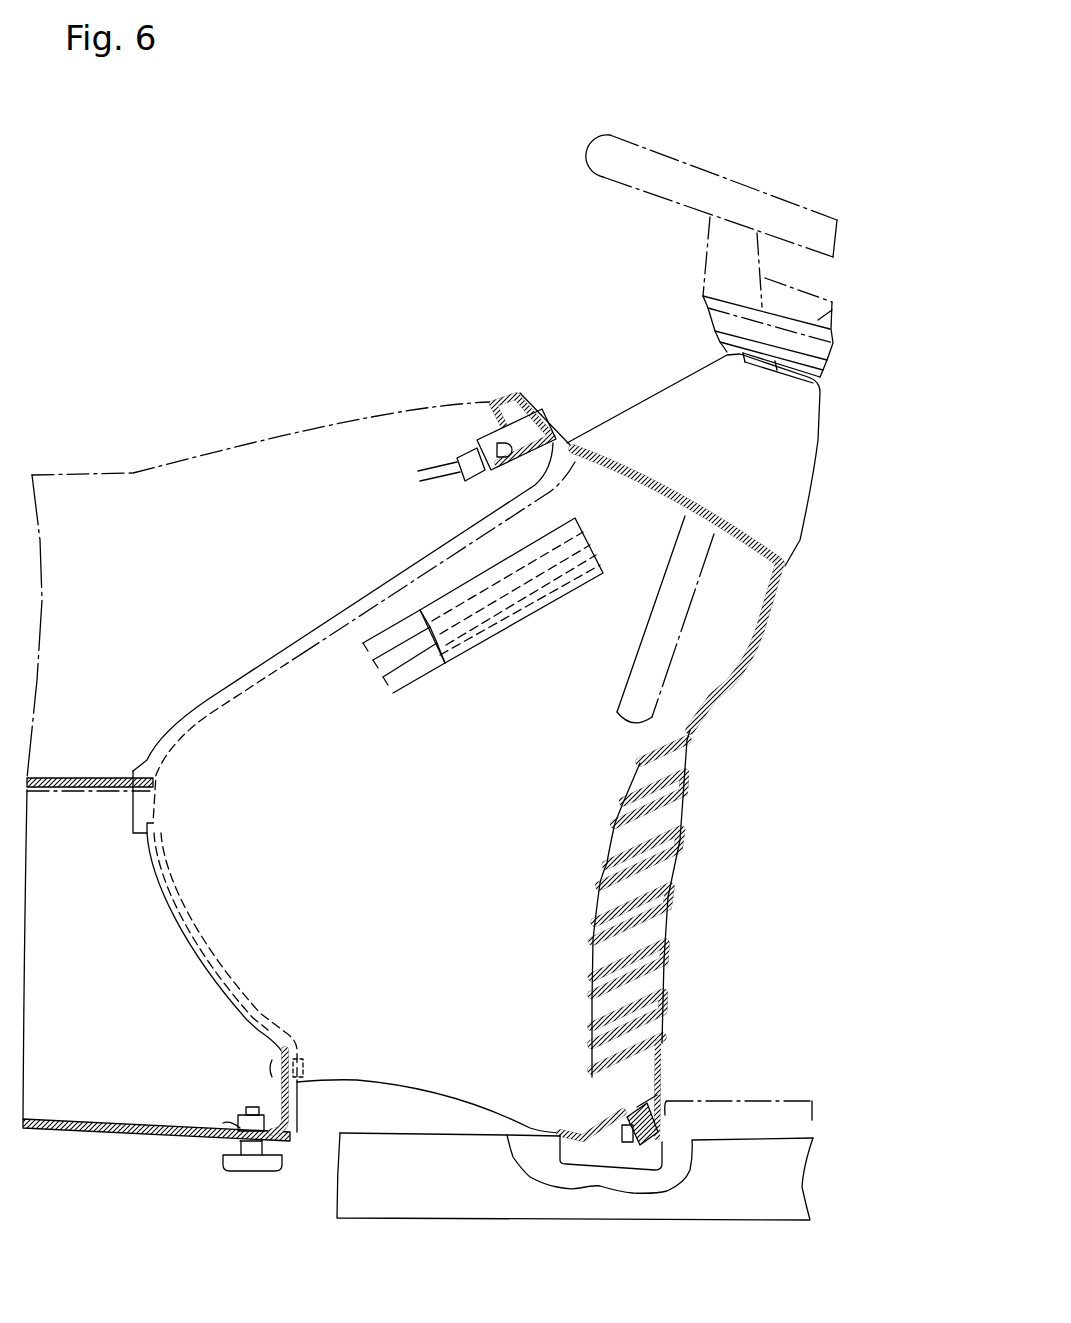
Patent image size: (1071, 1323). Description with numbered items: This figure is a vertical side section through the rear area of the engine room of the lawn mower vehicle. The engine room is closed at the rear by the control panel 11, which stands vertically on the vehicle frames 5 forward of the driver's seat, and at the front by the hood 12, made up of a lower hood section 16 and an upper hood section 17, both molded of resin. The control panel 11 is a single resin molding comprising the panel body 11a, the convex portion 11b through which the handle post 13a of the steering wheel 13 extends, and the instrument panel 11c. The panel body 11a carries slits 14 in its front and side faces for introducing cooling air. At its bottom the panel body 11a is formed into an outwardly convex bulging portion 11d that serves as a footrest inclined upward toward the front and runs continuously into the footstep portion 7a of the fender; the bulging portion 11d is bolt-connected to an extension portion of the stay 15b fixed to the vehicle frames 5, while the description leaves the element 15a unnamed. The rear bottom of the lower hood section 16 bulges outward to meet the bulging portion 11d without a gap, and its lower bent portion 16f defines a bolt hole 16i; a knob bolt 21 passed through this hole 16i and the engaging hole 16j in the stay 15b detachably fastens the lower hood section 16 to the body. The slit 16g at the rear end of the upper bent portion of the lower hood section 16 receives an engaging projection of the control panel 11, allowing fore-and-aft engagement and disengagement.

The vehicle frames 5 is at (370, 1210).
The footstep portions 7a is at (742, 1100).
The control panel 11 is at (297, 640).
The panel body 11a is at (716, 700).
The convex portion 11b is at (692, 380).
The instrument panel 11c is at (662, 480).
The bulging portions 11d is at (202, 963).
The hood 12 is at (310, 426).
The steering wheel 13 is at (743, 191).
The handle post 13a is at (684, 626).
The slits 14 is at (680, 860).
The bracket lower end 15a is at (610, 1117).
The stay 15b is at (298, 1102).
The lower hood section 16 is at (78, 1136).
The lower bent portions 16f is at (213, 1136).
The slits 16g is at (160, 773).
The bolt holes 16i is at (228, 1137).
The engaging holes 16j is at (227, 1120).
The upper hood section 17 is at (168, 468).
The knob bolts 21 is at (250, 1164).